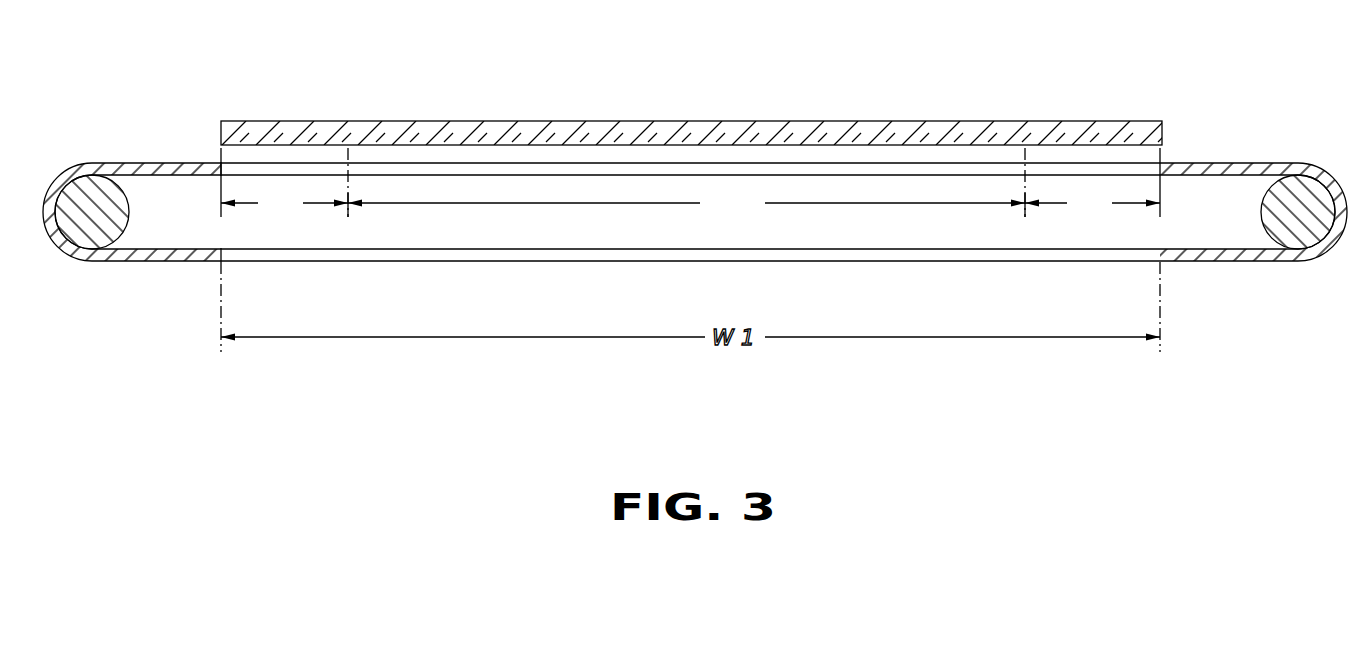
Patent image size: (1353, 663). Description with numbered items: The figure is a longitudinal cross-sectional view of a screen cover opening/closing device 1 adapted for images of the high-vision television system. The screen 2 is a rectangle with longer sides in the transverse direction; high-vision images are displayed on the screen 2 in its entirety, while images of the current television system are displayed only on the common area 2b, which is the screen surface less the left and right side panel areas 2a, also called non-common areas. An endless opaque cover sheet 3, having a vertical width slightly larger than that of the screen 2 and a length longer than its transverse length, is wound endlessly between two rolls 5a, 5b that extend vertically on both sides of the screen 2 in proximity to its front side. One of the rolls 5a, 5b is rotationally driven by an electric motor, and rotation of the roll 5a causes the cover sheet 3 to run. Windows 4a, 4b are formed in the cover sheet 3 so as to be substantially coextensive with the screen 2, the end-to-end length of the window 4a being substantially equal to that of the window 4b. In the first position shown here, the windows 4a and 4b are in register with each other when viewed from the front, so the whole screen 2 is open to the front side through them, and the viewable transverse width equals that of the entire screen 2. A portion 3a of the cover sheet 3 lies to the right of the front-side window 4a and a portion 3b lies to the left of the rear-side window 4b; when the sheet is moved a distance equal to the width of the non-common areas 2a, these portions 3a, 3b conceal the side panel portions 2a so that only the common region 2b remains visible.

The screen cover opening/closing device 1 is at (1219, 276).
The screen 2 is at (617, 131).
The side panel areas 2a is at (690, 203).
The common area 2b is at (686, 203).
The cover sheet 3 is at (123, 259).
The portion of the cover sheet 3a is at (1173, 263).
The portion of the cover sheet 3b is at (175, 176).
The front-side window 4a is at (222, 255).
The rear-side window 4b is at (222, 167).
The roll 5a is at (90, 233).
The roll 5b is at (1302, 236).